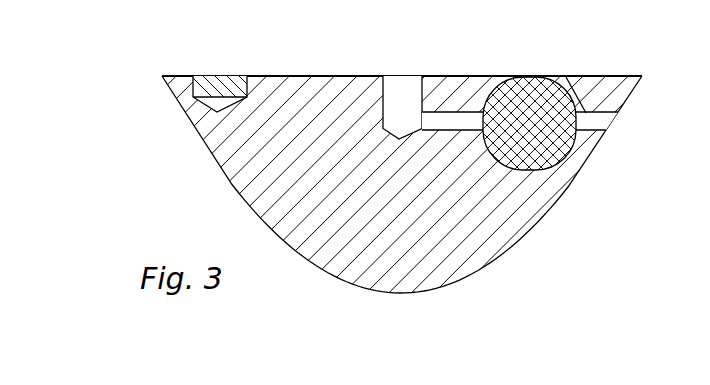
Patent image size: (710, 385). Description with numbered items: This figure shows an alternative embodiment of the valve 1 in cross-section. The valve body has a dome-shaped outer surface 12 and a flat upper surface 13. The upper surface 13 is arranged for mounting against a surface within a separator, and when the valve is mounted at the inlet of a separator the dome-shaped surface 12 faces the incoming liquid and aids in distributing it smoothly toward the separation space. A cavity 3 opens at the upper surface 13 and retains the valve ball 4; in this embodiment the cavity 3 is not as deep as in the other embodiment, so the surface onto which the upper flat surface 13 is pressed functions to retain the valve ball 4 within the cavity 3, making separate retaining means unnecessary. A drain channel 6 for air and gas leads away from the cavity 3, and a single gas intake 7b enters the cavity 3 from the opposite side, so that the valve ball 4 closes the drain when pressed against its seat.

The valve 1 is at (355, 163).
The cavity 3 is at (535, 106).
The valve ball 4 is at (527, 100).
The drain channel 6 is at (399, 92).
The gas intake channel 7b is at (614, 127).
The dome-shaped outer surface 12 is at (232, 186).
The flat upper surface 13 is at (305, 76).